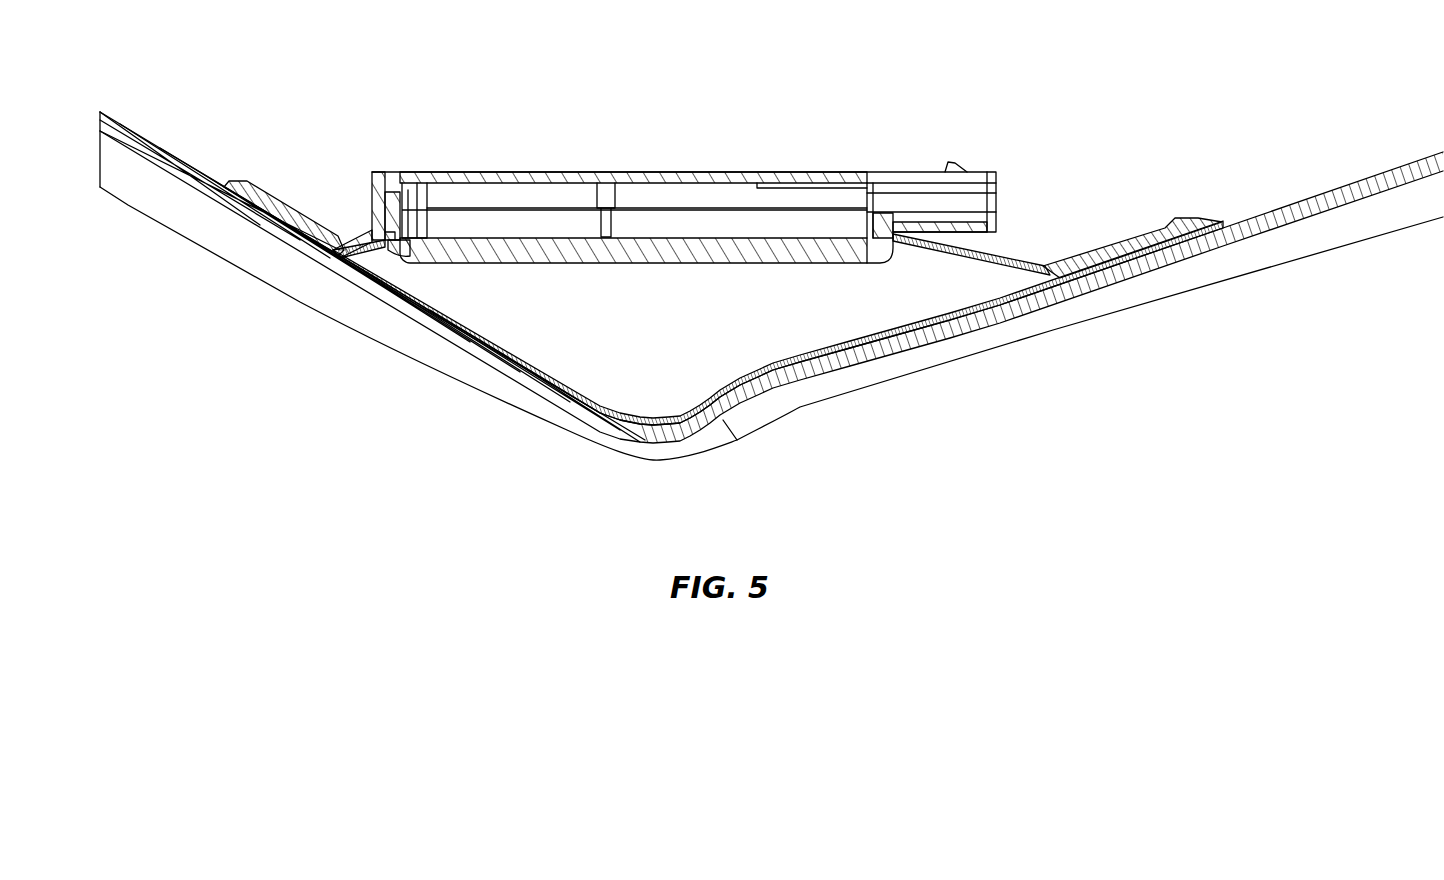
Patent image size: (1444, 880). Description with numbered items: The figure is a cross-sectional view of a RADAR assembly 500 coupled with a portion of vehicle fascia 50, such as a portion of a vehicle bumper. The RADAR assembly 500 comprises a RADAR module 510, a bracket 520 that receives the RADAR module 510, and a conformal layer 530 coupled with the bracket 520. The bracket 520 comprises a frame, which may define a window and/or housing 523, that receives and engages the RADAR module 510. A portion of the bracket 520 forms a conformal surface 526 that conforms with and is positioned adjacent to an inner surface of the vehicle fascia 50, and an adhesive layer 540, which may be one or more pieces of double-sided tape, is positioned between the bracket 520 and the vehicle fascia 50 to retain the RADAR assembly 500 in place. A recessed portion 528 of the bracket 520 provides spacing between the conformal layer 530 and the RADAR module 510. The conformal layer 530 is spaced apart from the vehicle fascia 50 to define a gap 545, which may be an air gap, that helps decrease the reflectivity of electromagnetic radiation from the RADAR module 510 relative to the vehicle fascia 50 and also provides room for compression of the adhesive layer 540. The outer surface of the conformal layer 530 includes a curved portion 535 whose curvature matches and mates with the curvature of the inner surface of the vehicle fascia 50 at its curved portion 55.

The vehicle fascia 50 is at (1397, 189).
The curved portion 55 is at (676, 430).
The RADAR assembly 500 is at (1130, 72).
The RADAR module 510 is at (668, 157).
The bracket 520 is at (1045, 252).
The housing 523 is at (373, 194).
The conformal surface 526 is at (283, 193).
The recessed portion 528 is at (653, 310).
The conformal layer 530 is at (937, 305).
The curved portion 535 is at (655, 417).
The adhesive layer 540 is at (243, 184).
The gap 545 is at (925, 328).